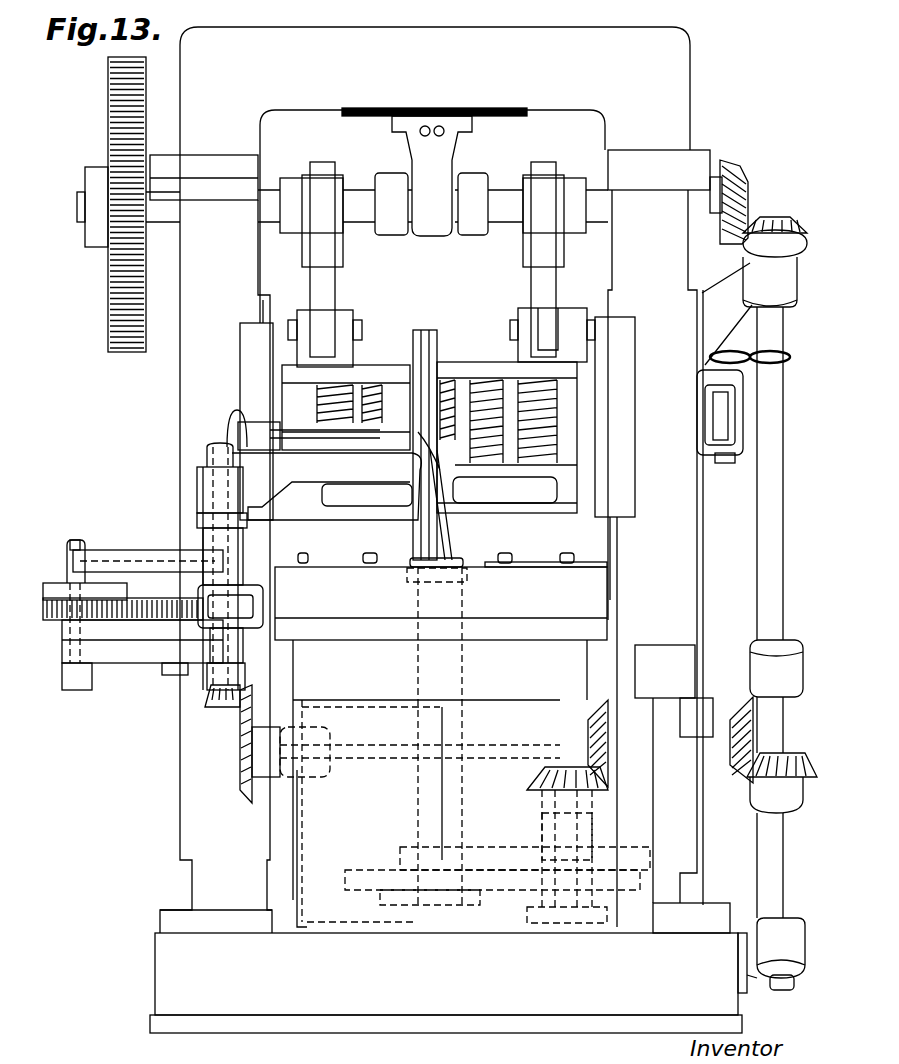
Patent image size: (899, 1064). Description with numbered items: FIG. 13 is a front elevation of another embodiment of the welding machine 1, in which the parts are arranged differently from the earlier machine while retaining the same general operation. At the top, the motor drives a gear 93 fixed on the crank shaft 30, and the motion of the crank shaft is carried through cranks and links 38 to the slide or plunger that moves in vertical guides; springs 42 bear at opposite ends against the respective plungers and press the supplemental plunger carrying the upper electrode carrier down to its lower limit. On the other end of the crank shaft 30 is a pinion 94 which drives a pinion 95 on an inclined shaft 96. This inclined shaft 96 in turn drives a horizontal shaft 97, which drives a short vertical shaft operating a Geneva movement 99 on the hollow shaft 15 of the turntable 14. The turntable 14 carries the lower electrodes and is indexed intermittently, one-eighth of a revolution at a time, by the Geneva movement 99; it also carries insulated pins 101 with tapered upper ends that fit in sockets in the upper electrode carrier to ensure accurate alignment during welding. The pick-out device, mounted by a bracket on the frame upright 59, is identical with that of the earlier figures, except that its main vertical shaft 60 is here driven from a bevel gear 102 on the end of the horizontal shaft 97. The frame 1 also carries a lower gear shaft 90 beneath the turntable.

The machine frame / bed plate 1 is at (555, 558).
The turntable 14 is at (441, 603).
The hollow shaft 15 is at (418, 778).
The crank shaft 30 is at (352, 228).
The links 38 is at (330, 302).
The springs 42 is at (476, 388).
The upright 59 is at (436, 450).
The vertical shaft 60 is at (205, 535).
The gear shaft 90 is at (548, 822).
The gear 93 is at (108, 285).
The pinion 94 is at (738, 165).
The pinion 95 is at (747, 218).
The inclined shaft 96 is at (762, 524).
The horizontal shaft 97 is at (552, 745).
The Geneva movement 99 is at (498, 893).
The insulated pins 101 is at (502, 553).
The bevel gear 102 is at (245, 778).